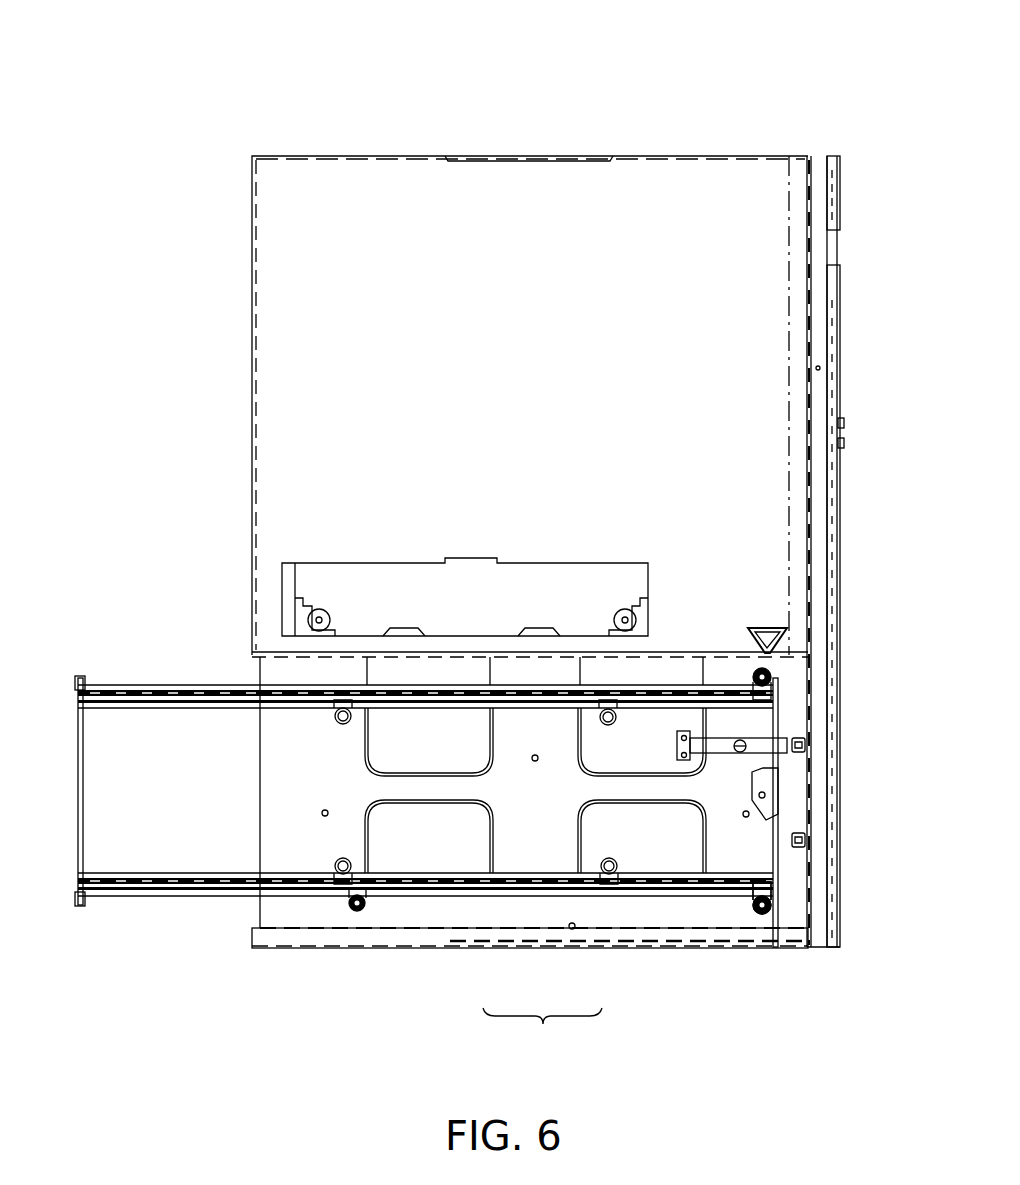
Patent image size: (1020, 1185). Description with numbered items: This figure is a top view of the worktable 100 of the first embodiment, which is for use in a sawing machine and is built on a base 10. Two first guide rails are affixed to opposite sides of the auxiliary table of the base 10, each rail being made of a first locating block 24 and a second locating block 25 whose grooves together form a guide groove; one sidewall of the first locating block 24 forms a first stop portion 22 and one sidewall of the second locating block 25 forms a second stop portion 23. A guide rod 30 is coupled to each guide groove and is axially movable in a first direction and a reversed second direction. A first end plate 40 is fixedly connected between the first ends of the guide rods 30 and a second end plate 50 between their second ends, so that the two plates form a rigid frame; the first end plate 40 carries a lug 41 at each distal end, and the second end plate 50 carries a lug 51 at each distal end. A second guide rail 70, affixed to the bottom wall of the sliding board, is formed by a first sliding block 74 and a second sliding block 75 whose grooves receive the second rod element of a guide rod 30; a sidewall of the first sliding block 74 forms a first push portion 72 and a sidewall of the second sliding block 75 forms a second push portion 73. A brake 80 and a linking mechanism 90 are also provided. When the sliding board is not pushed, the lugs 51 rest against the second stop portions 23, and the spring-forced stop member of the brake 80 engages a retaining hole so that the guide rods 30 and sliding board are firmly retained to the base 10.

The worktable 100 is at (343, 90).
The base 10 is at (252, 200).
The first stop portion 22 is at (350, 900).
The second stop portion 23 is at (773, 905).
The first locating block 24 is at (366, 906).
The second locating block 25 is at (760, 910).
The guide rod 30 is at (178, 898).
The first end plate 40 is at (78, 762).
The lug 41 is at (80, 676).
The second end plate 50 is at (778, 856).
The lug 51 is at (775, 690).
The second guide rail 70 is at (542, 1034).
The first push portion 72 is at (620, 876).
The second push portion 73 is at (340, 862).
The first sliding block 74 is at (604, 870).
The second sliding block 75 is at (348, 862).
The brake 80 is at (790, 793).
The linking mechanism 90 is at (790, 727).